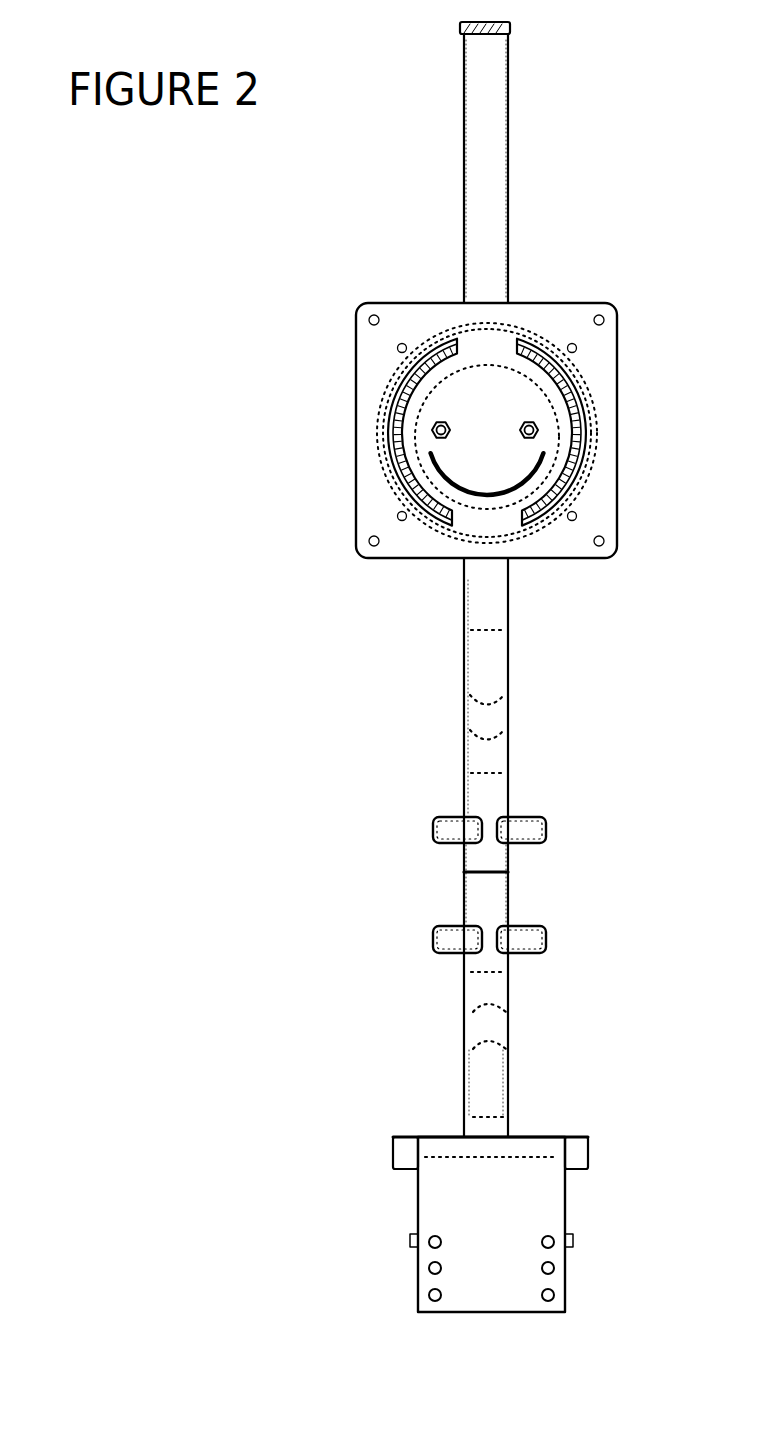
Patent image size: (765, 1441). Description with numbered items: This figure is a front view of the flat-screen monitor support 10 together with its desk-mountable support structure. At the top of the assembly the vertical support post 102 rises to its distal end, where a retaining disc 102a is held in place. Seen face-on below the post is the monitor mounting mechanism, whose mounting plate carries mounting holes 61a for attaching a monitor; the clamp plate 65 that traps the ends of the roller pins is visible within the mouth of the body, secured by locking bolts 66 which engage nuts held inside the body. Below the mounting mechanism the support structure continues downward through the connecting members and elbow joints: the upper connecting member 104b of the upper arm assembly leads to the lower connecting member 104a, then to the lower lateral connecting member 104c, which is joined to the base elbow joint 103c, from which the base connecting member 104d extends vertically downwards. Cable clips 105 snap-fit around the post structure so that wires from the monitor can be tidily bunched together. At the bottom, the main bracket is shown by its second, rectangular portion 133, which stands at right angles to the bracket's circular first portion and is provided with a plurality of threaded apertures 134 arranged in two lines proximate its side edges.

The flat-screen monitor support 10 is at (349, 256).
The mounting holes 61a is at (602, 320).
The clamp plate 65 is at (477, 406).
The locking bolts 66 is at (436, 433).
The vertical support post 102 is at (498, 151).
The retaining disc 102a is at (511, 28).
The base elbow joint 103c is at (493, 1078).
The lower connecting member 104a is at (497, 893).
The upper connecting member 104b is at (500, 787).
The lower lateral connecting member 104c is at (500, 1028).
The base connecting member 104d is at (500, 1128).
The cable clips 105 is at (600, 948).
The second rectangular portion 133 is at (448, 1192).
The threaded apertures 134 is at (550, 1243).